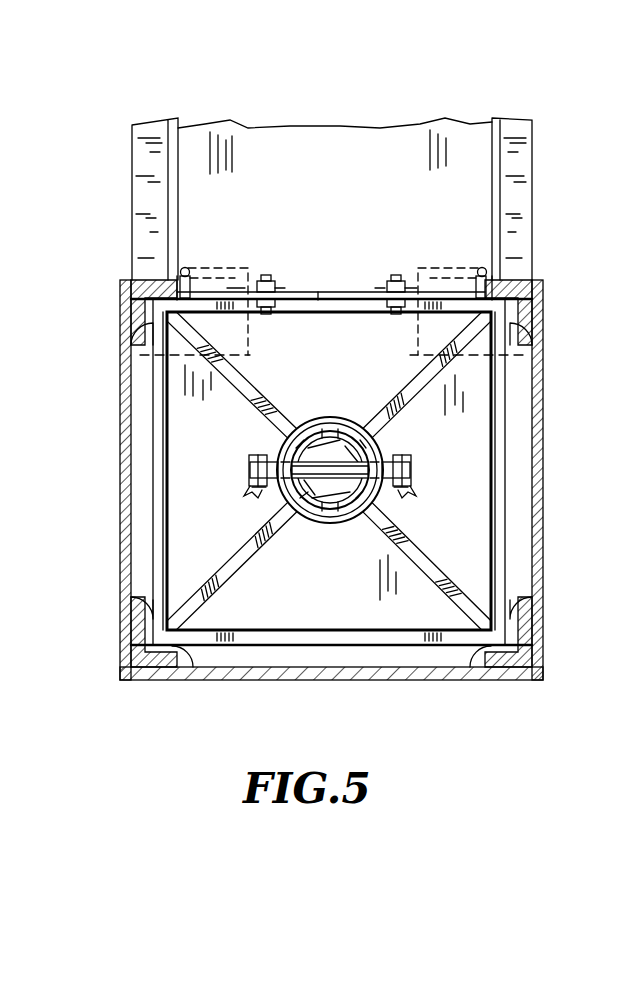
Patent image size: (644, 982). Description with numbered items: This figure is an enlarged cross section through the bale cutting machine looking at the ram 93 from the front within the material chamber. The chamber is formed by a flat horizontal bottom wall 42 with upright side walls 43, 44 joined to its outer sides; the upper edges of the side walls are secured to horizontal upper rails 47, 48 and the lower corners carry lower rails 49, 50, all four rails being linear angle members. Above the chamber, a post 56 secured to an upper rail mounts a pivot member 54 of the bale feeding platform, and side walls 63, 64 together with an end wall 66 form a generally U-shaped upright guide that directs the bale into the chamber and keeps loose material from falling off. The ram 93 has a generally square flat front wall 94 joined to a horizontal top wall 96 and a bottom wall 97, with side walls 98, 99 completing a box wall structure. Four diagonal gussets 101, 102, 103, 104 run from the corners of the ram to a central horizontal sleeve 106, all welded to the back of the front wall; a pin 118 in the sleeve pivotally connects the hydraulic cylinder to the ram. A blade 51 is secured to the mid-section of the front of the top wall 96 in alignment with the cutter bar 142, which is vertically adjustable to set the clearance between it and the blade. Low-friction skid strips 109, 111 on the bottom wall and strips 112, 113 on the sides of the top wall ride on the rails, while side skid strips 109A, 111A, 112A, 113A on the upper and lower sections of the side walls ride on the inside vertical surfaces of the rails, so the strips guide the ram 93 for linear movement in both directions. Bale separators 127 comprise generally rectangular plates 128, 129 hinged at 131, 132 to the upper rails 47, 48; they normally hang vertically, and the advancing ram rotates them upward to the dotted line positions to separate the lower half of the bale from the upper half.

The bottom wall 42 is at (320, 679).
The side wall 43 is at (125, 522).
The side wall 44 is at (536, 522).
The upper rail 47 is at (119, 301).
The upper rail 48 is at (540, 301).
The lower rail 49 is at (122, 648).
The lower rail 50 is at (540, 648).
The blade 51 is at (306, 302).
The pivot member 54 is at (141, 155).
The post 56 is at (520, 155).
The side wall 63 is at (488, 143).
The side wall 64 is at (178, 148).
The end wall 66 is at (340, 169).
The ram 93 is at (493, 466).
The front wall 94 is at (328, 384).
The top wall 96 is at (357, 306).
The bottom wall 97 is at (338, 632).
The side wall 98 is at (156, 522).
The side wall 99 is at (420, 472).
The diagonal gusset 101 is at (260, 402).
The diagonal gusset 102 is at (387, 406).
The diagonal gusset 103 is at (418, 538).
The diagonal gusset 104 is at (232, 587).
The sleeve 106 is at (334, 522).
The skid strip 109 is at (465, 669).
The side skid strip 109A is at (531, 597).
The skid strip 111 is at (180, 669).
The side skid strip 111A is at (130, 597).
The skid strip 112 is at (170, 284).
The side skid strip 112A is at (140, 355).
The skid strip 113 is at (493, 284).
The side skid strip 113A is at (531, 355).
The pin 118 is at (248, 478).
The bale separator 127 is at (350, 250).
The plate 128 is at (430, 270).
The plate 129 is at (213, 268).
The hinge 131 is at (478, 268).
The hinge 132 is at (186, 268).
The cutter bar 142 is at (316, 300).